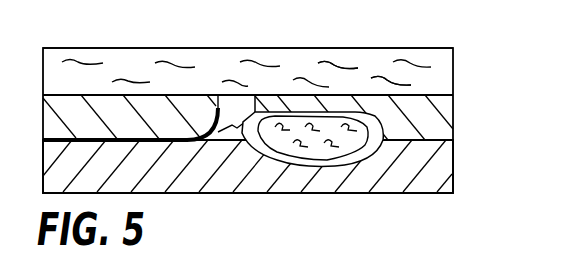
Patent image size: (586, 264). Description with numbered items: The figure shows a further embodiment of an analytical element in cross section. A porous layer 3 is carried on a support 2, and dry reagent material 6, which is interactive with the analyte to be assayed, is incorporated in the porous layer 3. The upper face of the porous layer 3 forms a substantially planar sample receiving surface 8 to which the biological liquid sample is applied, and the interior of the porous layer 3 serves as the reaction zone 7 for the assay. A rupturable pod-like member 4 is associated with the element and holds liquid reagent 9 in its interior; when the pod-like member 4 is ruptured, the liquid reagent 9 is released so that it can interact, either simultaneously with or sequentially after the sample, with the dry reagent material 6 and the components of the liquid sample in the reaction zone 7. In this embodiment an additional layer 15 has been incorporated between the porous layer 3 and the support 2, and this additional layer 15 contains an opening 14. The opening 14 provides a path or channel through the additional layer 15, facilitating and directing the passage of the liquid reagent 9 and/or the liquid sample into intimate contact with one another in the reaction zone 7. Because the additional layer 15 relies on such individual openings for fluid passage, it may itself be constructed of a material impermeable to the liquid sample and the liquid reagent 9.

The support 2 is at (454, 163).
The porous layer 3 is at (454, 72).
The rupturable pod-like member 4 is at (360, 150).
The dry reagent material 6 is at (378, 80).
The reaction zone 7 is at (202, 62).
The sample receiving surface 8 is at (267, 48).
The liquid reagent 9 is at (333, 150).
The opening 14 is at (243, 135).
The additional layer 15 is at (454, 112).